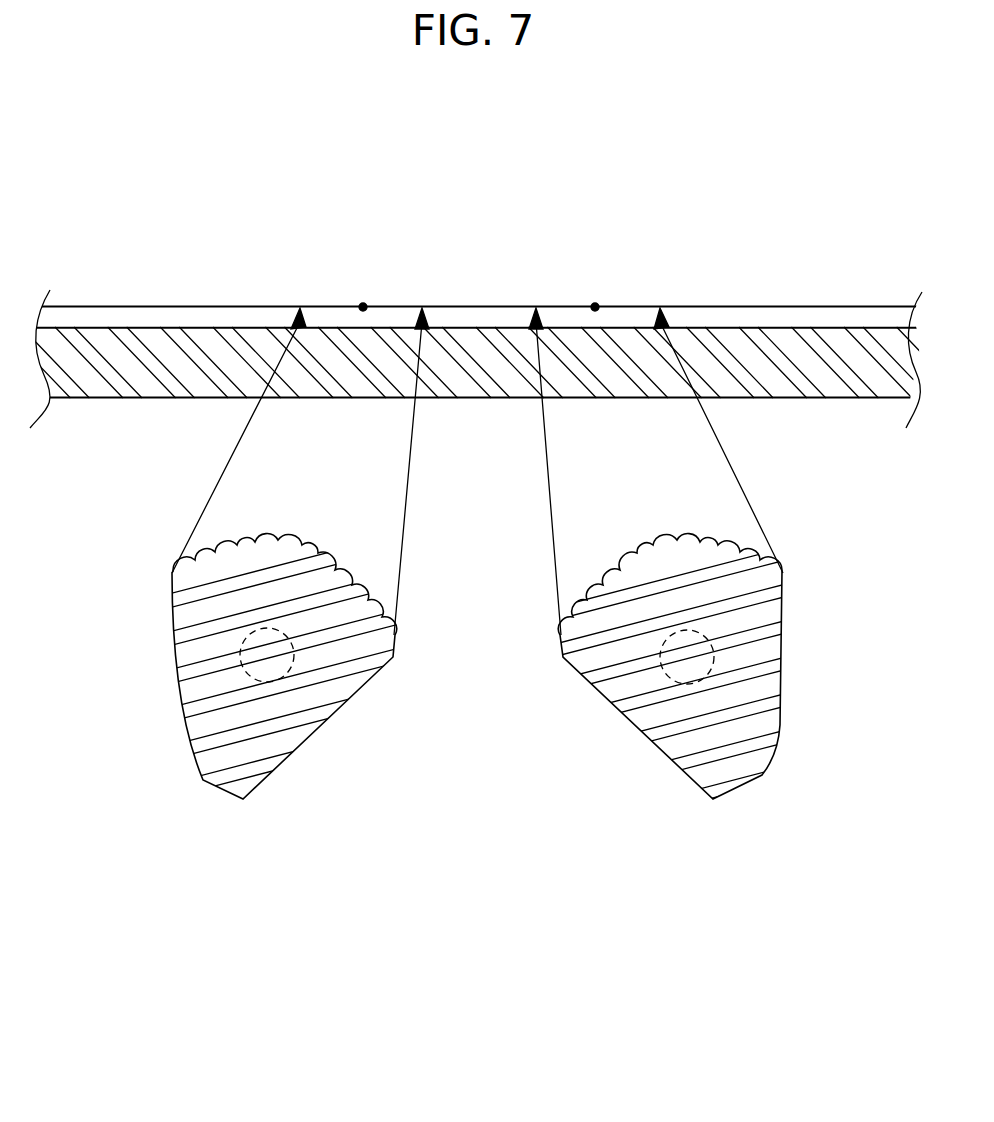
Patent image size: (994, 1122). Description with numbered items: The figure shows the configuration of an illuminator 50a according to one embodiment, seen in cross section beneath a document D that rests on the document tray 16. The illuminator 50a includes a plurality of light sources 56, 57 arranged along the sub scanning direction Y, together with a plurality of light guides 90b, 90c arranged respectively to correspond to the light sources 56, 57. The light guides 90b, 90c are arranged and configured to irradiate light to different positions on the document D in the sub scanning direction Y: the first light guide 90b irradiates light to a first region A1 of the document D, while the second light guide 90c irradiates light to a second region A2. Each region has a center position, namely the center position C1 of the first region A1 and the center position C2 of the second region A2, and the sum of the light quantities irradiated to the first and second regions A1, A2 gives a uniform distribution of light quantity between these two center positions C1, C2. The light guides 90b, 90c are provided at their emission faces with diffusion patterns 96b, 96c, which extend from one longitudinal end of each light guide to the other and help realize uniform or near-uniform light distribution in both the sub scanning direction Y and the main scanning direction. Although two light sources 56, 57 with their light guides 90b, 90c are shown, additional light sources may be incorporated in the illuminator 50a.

The document tray 16 is at (132, 380).
The illuminator 50a is at (512, 818).
The light source 56 is at (293, 662).
The light source 57 is at (713, 649).
The first light guide 90b is at (270, 770).
The second light guide 90c is at (762, 775).
The diffusion pattern 96b is at (300, 540).
The diffusion pattern 96c is at (662, 540).
The first region A1 is at (303, 278).
The second region A2 is at (536, 278).
The center position of the first region C1 is at (363, 311).
The center position of the second region C2 is at (595, 311).
The document D is at (738, 305).
The sub scanning direction Y is at (378, 198).